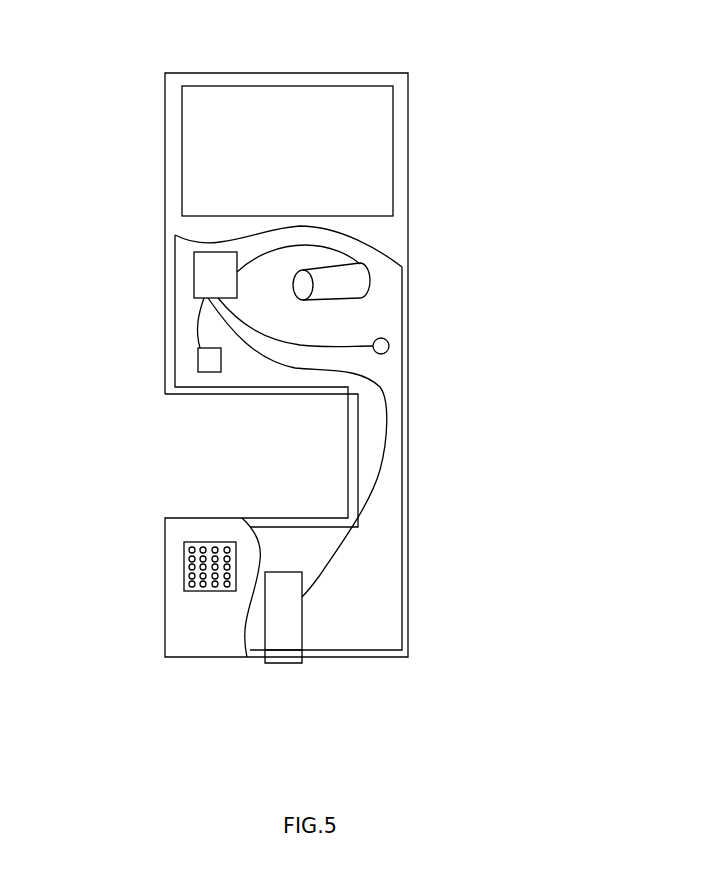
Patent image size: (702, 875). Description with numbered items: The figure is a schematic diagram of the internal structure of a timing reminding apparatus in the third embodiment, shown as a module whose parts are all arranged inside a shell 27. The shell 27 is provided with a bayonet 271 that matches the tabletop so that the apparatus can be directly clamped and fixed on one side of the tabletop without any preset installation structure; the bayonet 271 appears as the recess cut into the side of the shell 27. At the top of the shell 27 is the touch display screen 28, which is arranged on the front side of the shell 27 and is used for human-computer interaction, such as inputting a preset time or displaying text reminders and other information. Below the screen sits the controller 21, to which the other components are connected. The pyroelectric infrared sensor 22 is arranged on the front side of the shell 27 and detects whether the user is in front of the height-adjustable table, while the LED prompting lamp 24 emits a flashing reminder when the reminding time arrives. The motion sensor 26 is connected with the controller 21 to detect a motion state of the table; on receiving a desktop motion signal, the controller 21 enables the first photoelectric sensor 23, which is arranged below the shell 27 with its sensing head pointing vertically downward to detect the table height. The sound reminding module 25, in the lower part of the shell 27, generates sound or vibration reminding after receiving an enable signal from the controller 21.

The shell 27 is at (408, 128).
The bayonet 271 is at (208, 468).
The touch display screen 28 is at (200, 143).
The controller 21 is at (194, 272).
The motion sensor 26 is at (198, 352).
The pyroelectric infrared sensor 22 is at (337, 282).
The LED prompting lamp 24 is at (378, 354).
The sound reminding module 25 is at (183, 562).
The first photoelectric sensor 23 is at (302, 630).